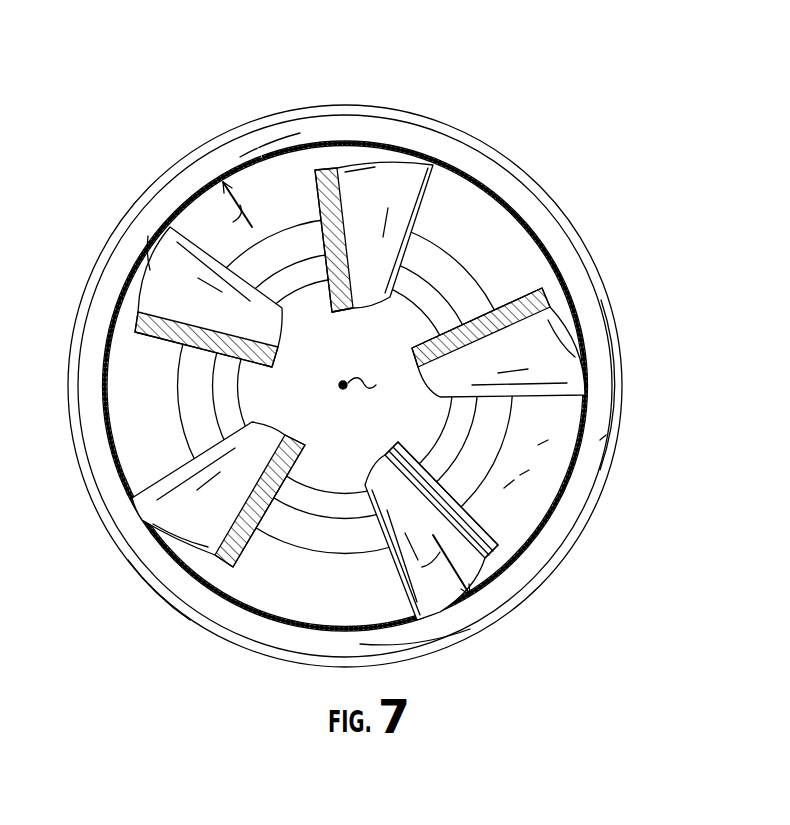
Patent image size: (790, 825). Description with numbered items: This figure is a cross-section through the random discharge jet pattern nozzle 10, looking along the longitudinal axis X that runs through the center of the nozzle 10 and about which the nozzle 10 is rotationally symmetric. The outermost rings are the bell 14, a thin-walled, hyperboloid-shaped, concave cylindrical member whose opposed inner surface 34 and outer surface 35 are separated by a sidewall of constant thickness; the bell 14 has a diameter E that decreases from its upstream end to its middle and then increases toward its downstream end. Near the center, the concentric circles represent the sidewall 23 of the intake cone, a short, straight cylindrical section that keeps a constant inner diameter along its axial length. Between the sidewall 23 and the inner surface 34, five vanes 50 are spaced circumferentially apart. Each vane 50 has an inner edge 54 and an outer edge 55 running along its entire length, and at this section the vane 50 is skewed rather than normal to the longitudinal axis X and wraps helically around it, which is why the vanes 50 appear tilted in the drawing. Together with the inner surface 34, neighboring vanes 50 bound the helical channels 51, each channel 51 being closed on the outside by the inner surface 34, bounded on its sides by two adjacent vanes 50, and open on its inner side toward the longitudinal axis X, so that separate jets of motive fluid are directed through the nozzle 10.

The random discharge jet pattern nozzle 10 is at (692, 100).
The bell 14 is at (603, 490).
The sidewall 23 is at (312, 498).
The inner surface 34 is at (371, 389).
The outer surface 35 is at (462, 208).
The vane 50 is at (378, 383).
The helical channel 51 is at (267, 185).
The inner edge 54 is at (343, 316).
The outer edge 55 is at (325, 165).
The diameter E is at (343, 390).
The longitudinal axis X is at (367, 392).